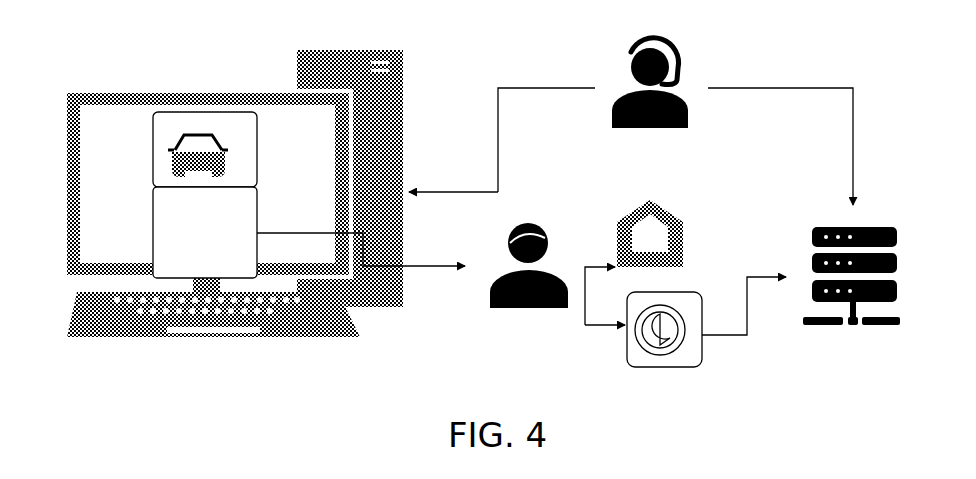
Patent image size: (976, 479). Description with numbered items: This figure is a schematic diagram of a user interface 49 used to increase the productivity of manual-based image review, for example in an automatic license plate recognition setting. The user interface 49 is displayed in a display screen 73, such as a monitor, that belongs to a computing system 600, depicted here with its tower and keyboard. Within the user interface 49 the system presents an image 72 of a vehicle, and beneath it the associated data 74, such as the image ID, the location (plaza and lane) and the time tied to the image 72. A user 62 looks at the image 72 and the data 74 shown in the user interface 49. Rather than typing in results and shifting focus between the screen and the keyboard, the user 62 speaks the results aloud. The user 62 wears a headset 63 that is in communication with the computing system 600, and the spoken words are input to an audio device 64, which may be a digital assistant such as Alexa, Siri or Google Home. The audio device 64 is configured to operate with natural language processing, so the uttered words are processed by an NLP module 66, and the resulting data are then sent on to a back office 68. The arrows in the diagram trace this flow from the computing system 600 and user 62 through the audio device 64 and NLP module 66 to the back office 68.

The computing system 600 is at (84, 85).
The user interface 49 is at (110, 136).
The image 72 is at (166, 117).
The display screen 73 is at (240, 100).
The data 74 is at (155, 232).
The user 62 is at (610, 120).
The headset 63 is at (677, 53).
The audio device 64 is at (700, 236).
The NLP module 66 is at (697, 343).
The back office 68 is at (906, 243).